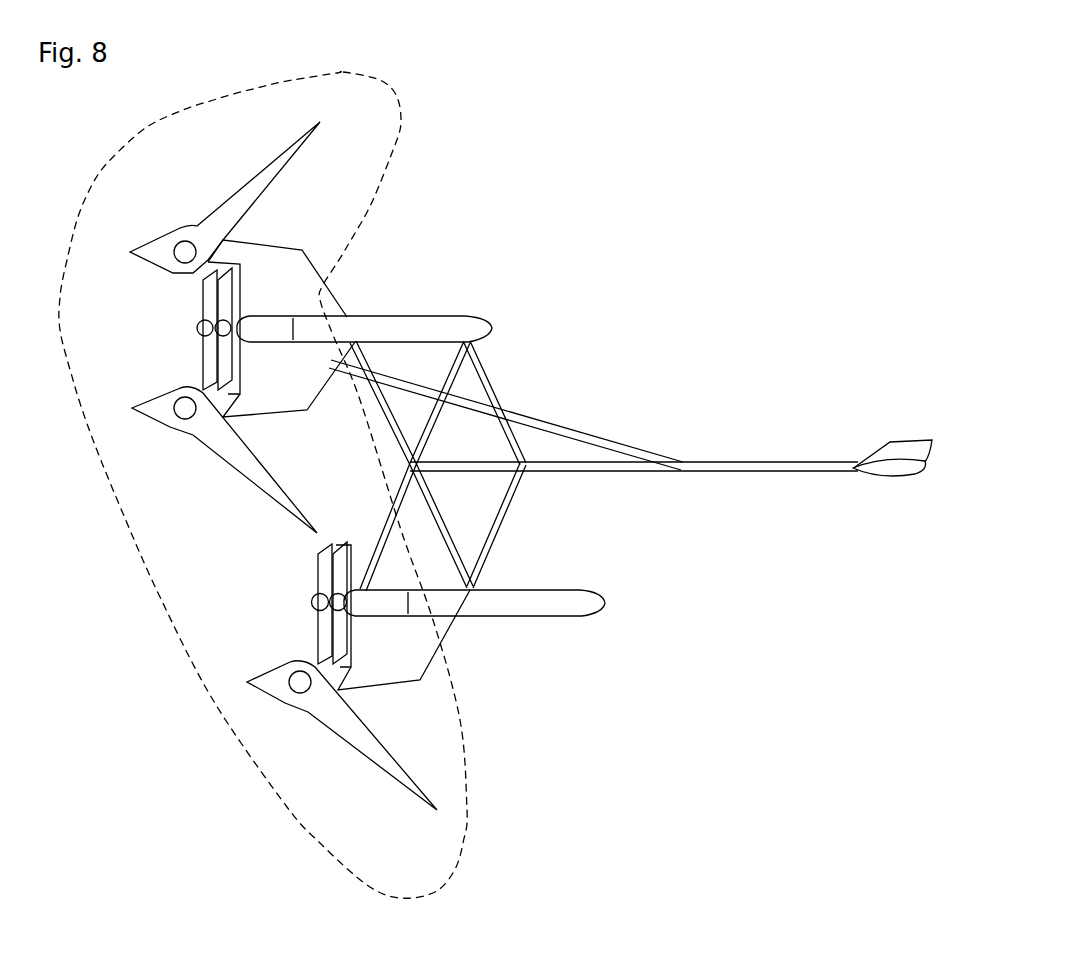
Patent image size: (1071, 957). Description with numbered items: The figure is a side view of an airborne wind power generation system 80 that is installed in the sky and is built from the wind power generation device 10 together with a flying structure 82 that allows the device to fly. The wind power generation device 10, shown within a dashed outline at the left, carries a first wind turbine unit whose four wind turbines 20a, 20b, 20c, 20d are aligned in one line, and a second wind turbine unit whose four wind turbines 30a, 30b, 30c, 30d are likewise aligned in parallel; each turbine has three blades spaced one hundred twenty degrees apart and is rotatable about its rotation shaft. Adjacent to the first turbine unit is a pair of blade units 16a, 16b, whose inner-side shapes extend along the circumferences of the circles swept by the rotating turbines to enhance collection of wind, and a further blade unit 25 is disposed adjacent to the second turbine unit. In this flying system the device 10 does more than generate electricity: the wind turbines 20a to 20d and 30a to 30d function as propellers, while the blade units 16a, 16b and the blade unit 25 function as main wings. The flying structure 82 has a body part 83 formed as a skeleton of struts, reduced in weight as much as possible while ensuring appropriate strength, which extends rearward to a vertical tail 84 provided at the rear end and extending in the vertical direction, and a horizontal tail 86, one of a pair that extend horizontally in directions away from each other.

The wind power generation device 10 is at (400, 137).
The blade unit 16a is at (233, 195).
The blade unit 16b is at (233, 468).
The wind turbine 20a is at (205, 302).
The wind turbine 20b is at (228, 288).
The wind turbine 20c is at (200, 335).
The wind turbine 20d is at (240, 308).
The blade unit 25 is at (355, 750).
The wind turbine 30a is at (318, 598).
The wind turbine 30b is at (343, 568).
The wind turbine 30c is at (314, 608).
The wind turbine 30d is at (340, 637).
The airborne wind power generation system 80 is at (584, 397).
The flying structure 82 is at (630, 435).
The body part 83 is at (497, 380).
The vertical tail 84 is at (845, 401).
The horizontal tail 86 is at (885, 472).